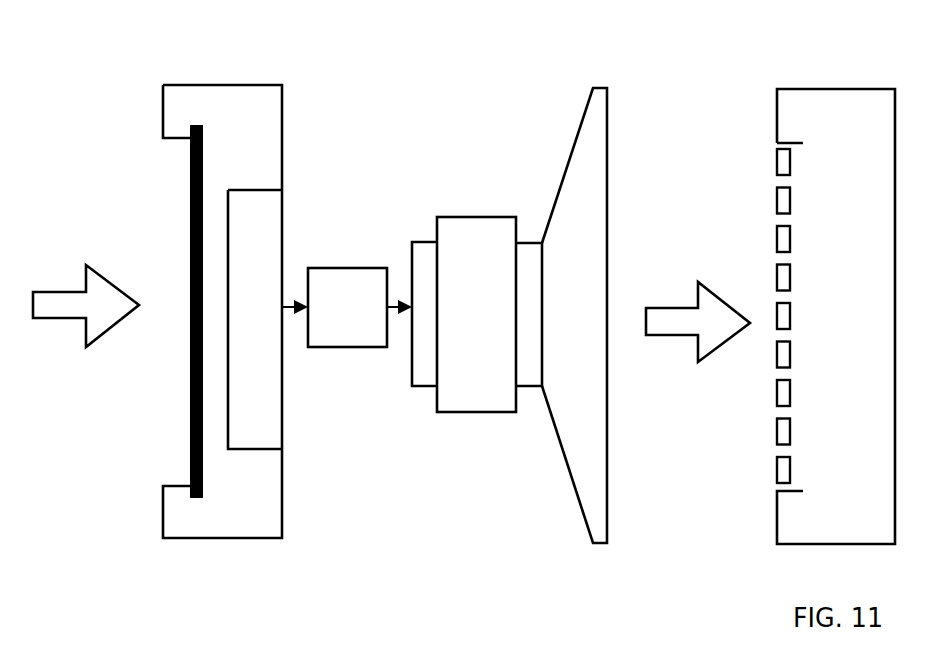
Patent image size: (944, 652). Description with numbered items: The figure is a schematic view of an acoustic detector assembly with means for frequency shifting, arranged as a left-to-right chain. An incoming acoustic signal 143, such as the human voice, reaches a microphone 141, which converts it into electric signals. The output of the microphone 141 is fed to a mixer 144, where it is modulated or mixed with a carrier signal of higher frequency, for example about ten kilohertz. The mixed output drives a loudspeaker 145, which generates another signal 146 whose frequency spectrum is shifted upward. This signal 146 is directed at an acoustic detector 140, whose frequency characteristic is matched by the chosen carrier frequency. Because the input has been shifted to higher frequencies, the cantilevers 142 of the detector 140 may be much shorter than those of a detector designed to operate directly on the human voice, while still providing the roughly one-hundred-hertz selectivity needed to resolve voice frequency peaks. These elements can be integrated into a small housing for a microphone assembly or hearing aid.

The acoustic detector 140 is at (823, 105).
The microphone 141 is at (272, 113).
The cantilevers 142 is at (781, 162).
The incoming acoustic signal 143 is at (103, 320).
The mixer 144 is at (347, 335).
The loudspeaker 145 is at (608, 225).
The signal 146 is at (673, 322).